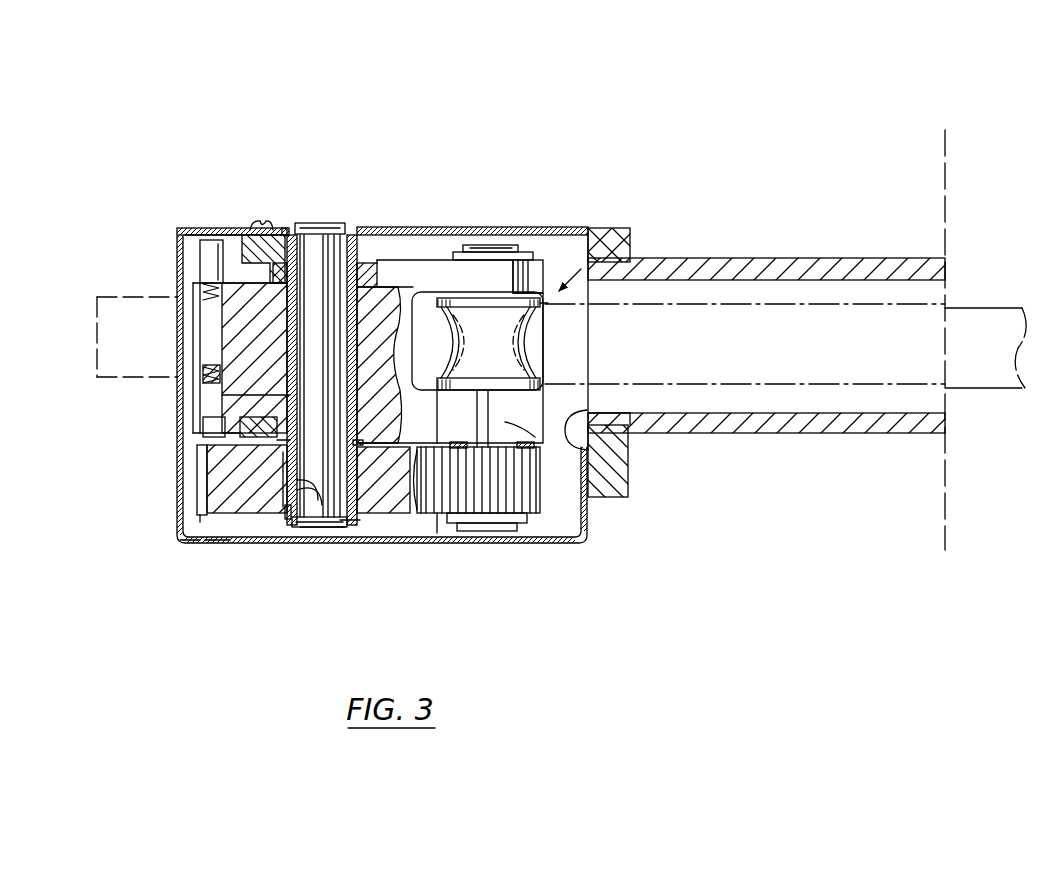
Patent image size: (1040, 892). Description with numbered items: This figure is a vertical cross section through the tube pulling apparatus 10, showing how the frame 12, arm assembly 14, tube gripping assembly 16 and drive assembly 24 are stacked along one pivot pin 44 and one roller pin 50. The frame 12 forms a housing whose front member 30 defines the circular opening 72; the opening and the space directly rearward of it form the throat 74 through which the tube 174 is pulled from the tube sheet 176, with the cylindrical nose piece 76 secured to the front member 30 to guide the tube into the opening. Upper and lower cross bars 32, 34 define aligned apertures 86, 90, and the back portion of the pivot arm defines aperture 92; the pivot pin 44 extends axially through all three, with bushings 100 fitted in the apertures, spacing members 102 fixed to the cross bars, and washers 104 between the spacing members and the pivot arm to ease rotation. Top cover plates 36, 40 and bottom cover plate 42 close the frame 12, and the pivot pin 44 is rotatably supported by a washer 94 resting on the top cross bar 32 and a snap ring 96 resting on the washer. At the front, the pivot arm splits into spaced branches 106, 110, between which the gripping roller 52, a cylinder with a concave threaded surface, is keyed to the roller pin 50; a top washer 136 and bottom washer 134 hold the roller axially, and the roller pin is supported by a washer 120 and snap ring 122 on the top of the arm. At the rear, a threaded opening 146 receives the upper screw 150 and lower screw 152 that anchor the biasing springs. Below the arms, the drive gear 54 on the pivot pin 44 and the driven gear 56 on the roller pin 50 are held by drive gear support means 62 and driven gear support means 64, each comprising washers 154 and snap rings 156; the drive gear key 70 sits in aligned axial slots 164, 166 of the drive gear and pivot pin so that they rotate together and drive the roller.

The tube pulling apparatus 10 is at (135, 147).
The frame 12 is at (604, 212).
The arm assembly 14 is at (404, 250).
The tube gripping assembly 16 is at (601, 262).
The drive assembly 24 is at (437, 560).
The front member 30 is at (612, 234).
The upper cross bar 32 is at (262, 238).
The lower cross bar 34 is at (287, 462).
The top cover plate 36 is at (497, 228).
The top cover plate 40 is at (225, 230).
The bottom cover plate 42 is at (215, 540).
The pivot pin 44 is at (317, 240).
The roller pin 50 is at (483, 525).
The gripping roller 52 is at (513, 347).
The drive gear 54 is at (188, 538).
The driven gear 56 is at (512, 497).
The drive gear support means 62 is at (355, 522).
The driven gear support means 64 is at (521, 531).
The drive gear key 70 is at (278, 505).
The opening 72 is at (620, 483).
The throat 74 is at (564, 391).
The nose piece 76 is at (882, 435).
The aperture 86 is at (341, 229).
The aperture 90 is at (290, 372).
The aperture 92 is at (285, 352).
The washer 94 is at (286, 232).
The snap ring 96 is at (313, 235).
The bushing 100 is at (262, 228).
The spacing member 102 is at (372, 258).
The washer 104 is at (268, 287).
The branch 106 is at (531, 272).
The branch 110 is at (585, 499).
The washer 120 is at (520, 257).
The snap ring 122 is at (505, 248).
The bottom washer 134 is at (290, 464).
The top washer 136 is at (547, 305).
The threaded opening 146 is at (205, 295).
The upper screw 150 is at (210, 253).
The lower screw 152 is at (207, 424).
The washer 154 is at (355, 524).
The snap ring 156 is at (284, 523).
The axial slot 164 is at (283, 463).
The axial slot 166 is at (323, 524).
The tube 174 is at (848, 390).
The tube sheet 176 is at (945, 470).